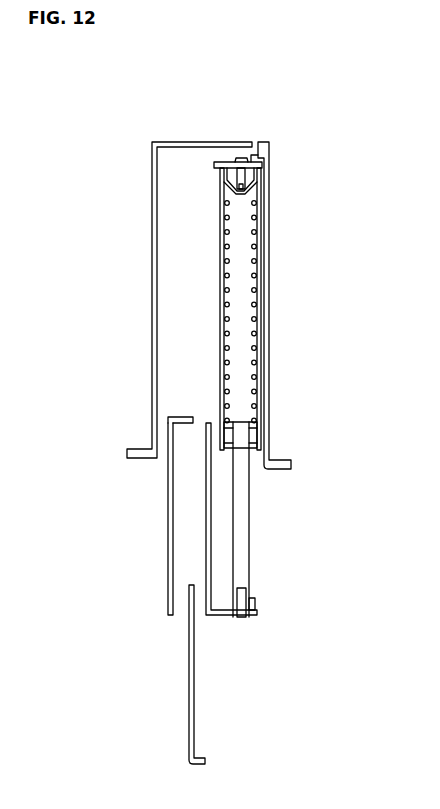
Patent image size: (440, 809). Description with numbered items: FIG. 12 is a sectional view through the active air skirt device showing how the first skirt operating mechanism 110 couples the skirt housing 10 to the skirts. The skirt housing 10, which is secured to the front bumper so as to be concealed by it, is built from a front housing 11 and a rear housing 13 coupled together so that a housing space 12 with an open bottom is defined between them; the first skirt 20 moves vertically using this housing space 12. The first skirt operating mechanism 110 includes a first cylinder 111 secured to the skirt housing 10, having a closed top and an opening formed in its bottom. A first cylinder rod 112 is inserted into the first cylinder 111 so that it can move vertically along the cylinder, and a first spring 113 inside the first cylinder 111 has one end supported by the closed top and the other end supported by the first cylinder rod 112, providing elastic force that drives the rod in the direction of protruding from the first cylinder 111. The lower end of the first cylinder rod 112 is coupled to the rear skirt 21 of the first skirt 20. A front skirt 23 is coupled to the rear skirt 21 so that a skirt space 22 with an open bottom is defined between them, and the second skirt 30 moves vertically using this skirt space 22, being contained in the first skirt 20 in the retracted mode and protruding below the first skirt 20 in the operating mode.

The skirt housing 10 is at (144, 137).
The front housing 11 is at (152, 176).
The housing space 12 is at (190, 174).
The rear housing 13 is at (271, 187).
The first skirt operating mechanism 110 is at (212, 247).
The first cylinder 111 is at (220, 312).
The first cylinder rod 112 is at (245, 518).
The first spring 113 is at (263, 318).
The first skirt 20 is at (160, 580).
The rear skirt 21 is at (246, 564).
The skirt space 22 is at (186, 534).
The front skirt 23 is at (168, 487).
The second skirt 30 is at (189, 688).